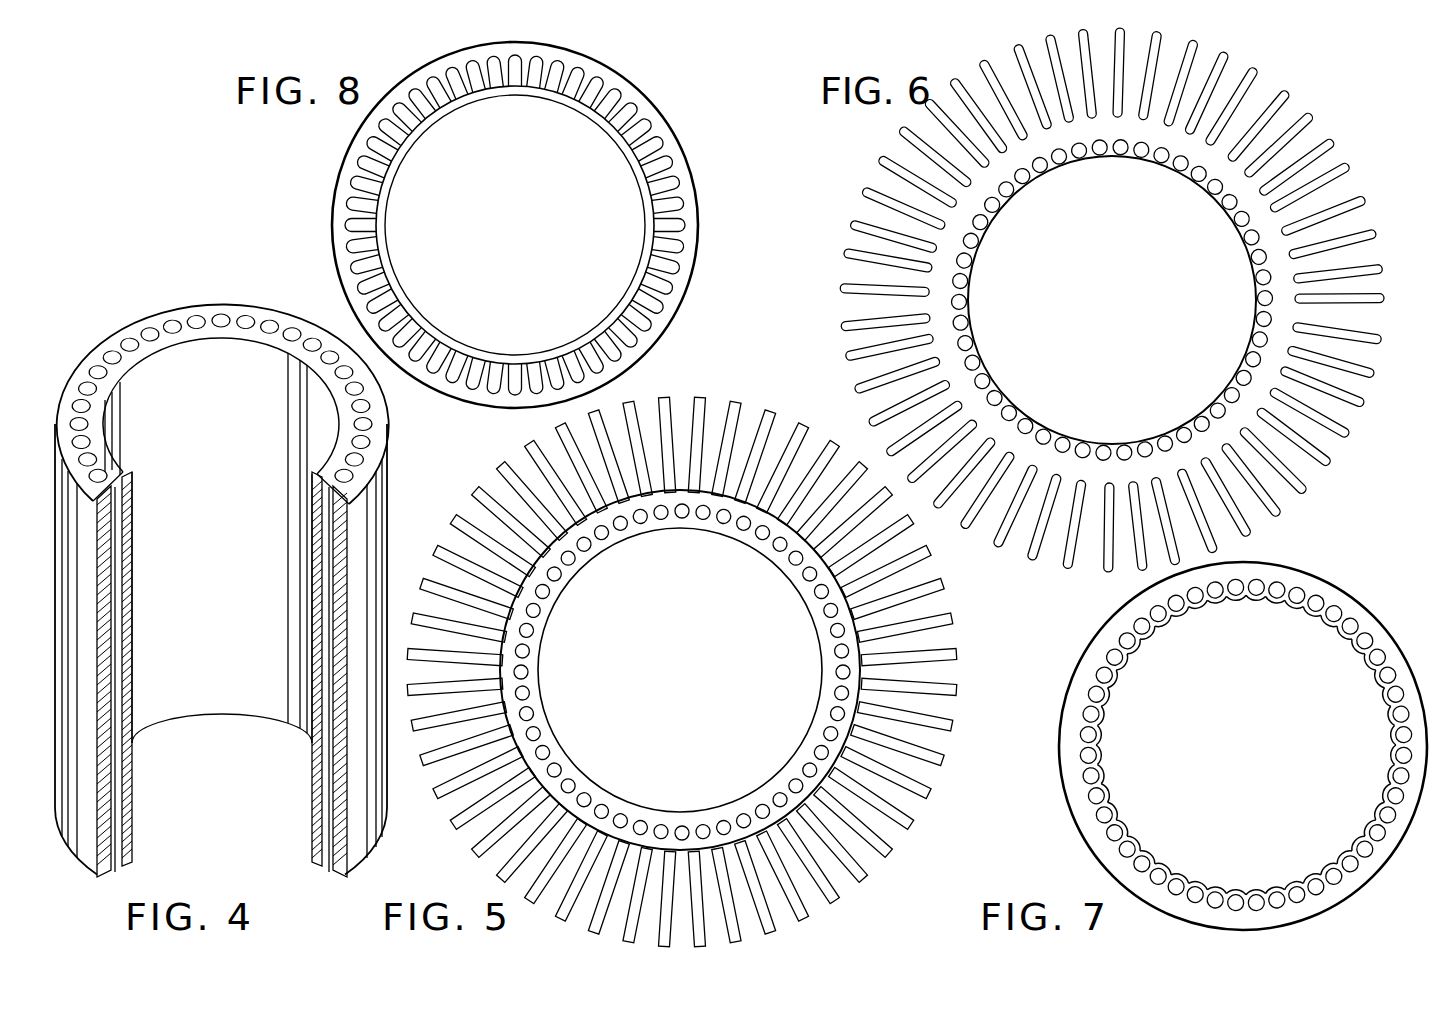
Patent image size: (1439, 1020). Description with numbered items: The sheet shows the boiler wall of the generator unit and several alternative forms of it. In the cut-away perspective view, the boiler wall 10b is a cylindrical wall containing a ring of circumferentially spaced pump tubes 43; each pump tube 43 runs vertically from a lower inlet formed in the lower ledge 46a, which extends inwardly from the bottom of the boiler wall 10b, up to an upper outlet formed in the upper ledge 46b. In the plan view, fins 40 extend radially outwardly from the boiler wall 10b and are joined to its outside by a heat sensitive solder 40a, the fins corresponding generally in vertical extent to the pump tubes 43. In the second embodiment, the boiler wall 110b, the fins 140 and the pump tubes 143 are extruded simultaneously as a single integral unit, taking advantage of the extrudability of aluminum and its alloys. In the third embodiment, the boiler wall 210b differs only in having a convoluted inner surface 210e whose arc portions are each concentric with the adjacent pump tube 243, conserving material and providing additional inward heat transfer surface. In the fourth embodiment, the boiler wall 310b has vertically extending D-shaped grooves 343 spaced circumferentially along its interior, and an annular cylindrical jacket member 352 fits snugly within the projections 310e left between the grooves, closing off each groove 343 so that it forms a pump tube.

In FIG. 4, the boiler wall 10b is at (118, 316).
In FIG. 4, the pump tube 43 is at (181, 320).
In FIG. 5, the pump tube 43 is at (662, 521).
In FIG. 4, the upper ledge 46b is at (226, 314).
In FIG. 4, the lower ledge 46a is at (318, 864).
In FIG. 5, the fin 40 is at (770, 418).
In FIG. 5, the heat sensitive solder 40a is at (721, 497).
In FIG. 6, the boiler wall 110b is at (1130, 128).
In FIG. 6, the fin 140 is at (848, 222).
In FIG. 6, the pump tube 143 is at (995, 198).
In FIG. 7, the boiler wall 210b is at (1068, 733).
In FIG. 7, the convoluted inner surface 210e is at (1103, 778).
In FIG. 7, the pump tube 243 is at (1142, 863).
In FIG. 8, the boiler wall 310b is at (340, 207).
In FIG. 8, the projections 310e is at (375, 237).
In FIG. 8, the D-shaped groove 343 is at (653, 153).
In FIG. 8, the annular cylindrical jacket member 352 is at (410, 140).